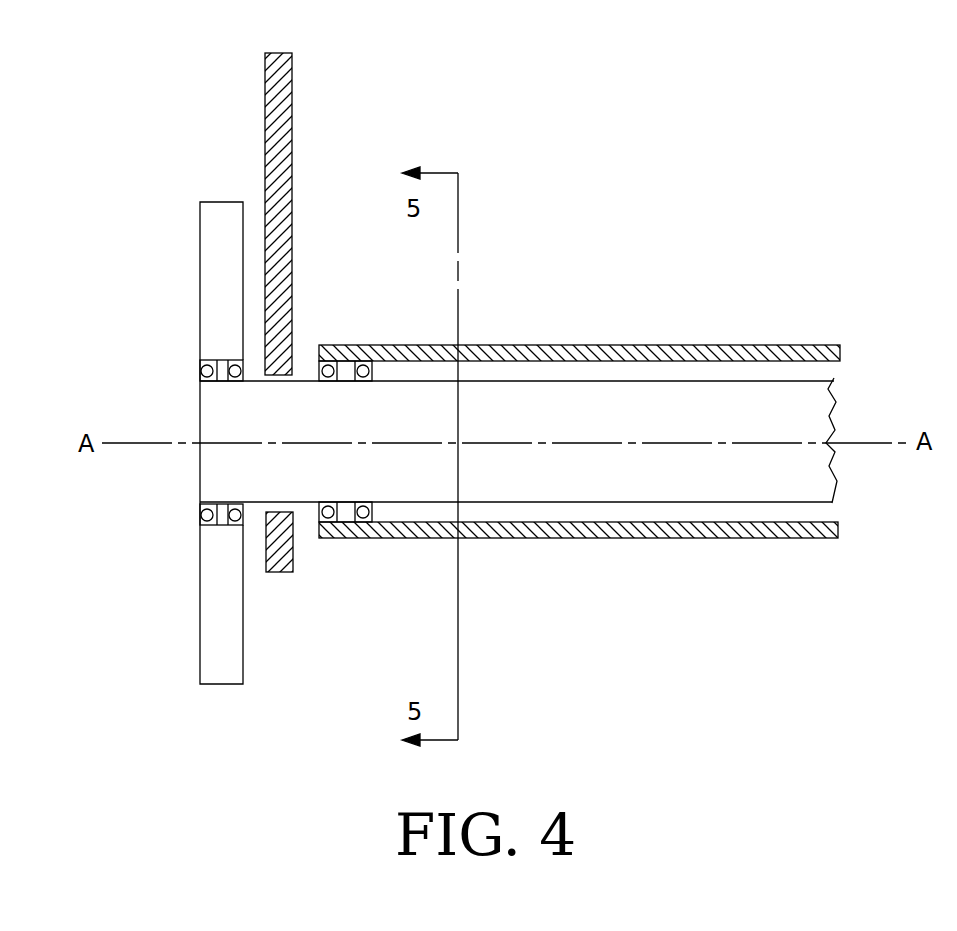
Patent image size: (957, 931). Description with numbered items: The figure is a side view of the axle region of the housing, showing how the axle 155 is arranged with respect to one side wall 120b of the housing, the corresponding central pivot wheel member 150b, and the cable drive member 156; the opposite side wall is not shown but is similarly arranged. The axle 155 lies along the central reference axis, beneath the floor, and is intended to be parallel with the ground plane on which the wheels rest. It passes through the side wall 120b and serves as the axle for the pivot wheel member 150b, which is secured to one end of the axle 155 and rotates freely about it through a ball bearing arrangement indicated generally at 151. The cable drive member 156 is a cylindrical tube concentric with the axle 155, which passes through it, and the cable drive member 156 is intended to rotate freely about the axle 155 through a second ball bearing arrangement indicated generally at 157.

The side wall 120b is at (282, 83).
The pivot wheel member 150b is at (212, 235).
The ball bearing arrangement 151 is at (202, 375).
The axle 155 is at (509, 468).
The cable drive member 156 is at (558, 345).
The ball bearing arrangement 157 is at (319, 373).